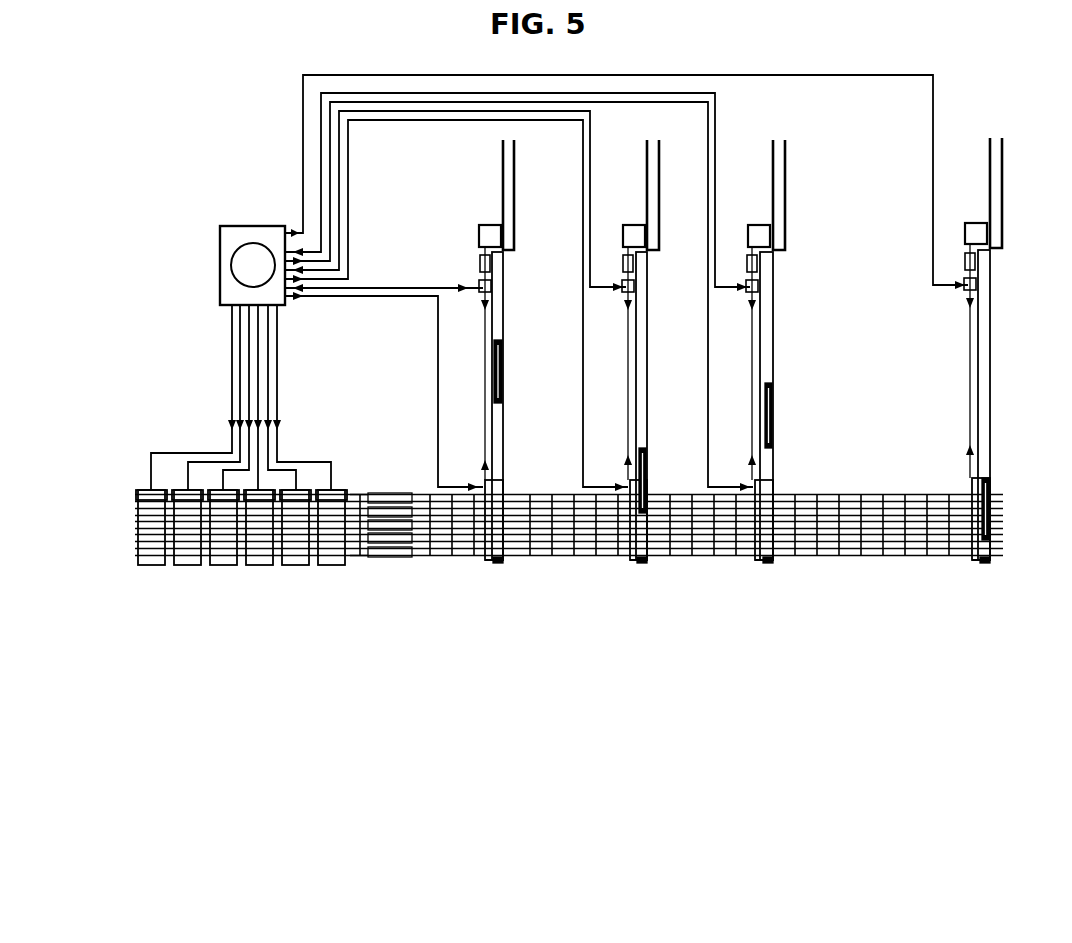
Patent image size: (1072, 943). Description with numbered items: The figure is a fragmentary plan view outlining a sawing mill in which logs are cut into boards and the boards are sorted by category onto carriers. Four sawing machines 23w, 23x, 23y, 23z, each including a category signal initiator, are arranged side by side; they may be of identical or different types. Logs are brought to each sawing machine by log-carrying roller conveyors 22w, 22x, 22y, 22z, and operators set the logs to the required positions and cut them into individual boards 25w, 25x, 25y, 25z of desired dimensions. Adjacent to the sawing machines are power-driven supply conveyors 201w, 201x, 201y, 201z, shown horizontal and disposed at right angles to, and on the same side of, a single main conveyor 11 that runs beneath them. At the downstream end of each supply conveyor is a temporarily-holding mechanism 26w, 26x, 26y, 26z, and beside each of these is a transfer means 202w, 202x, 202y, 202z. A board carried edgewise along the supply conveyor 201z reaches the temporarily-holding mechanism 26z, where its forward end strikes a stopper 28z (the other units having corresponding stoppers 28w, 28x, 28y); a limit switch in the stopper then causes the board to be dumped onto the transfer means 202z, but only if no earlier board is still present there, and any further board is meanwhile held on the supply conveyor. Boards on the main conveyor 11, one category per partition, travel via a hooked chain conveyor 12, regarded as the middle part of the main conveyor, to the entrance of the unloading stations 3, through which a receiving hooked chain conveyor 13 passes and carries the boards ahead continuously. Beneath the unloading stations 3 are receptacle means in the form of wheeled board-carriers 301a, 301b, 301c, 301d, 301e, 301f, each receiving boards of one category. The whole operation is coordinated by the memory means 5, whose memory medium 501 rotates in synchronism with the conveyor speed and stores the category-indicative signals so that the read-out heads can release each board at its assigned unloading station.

The memory means 5 is at (217, 247).
The memory medium 501 is at (242, 271).
The unloading stations 3 is at (244, 578).
The wheeled board-carrier 301a is at (333, 567).
The wheeled board-carrier 301b is at (292, 567).
The wheeled board-carrier 301c is at (258, 567).
The wheeled board-carrier 301d is at (222, 567).
The wheeled board-carrier 301e is at (180, 567).
The wheeled board-carrier 301f is at (142, 567).
The main conveyor 11 is at (880, 557).
The chain conveyor 12 is at (400, 560).
The hooked chain conveyor 13 is at (370, 560).
The roller conveyor 22z is at (516, 178).
The roller conveyor 22y is at (660, 178).
The roller conveyor 22x is at (786, 176).
The roller conveyor 22w is at (1003, 152).
The sawing machine 23z is at (478, 228).
The sawing machine 23y is at (622, 228).
The sawing machine 23x is at (747, 228).
The sawing machine 23w is at (968, 222).
The supply conveyor 201z is at (504, 276).
The supply conveyor 201y is at (648, 272).
The supply conveyor 201x is at (774, 308).
The supply conveyor 201w is at (992, 288).
The transfer means 202z is at (490, 562).
The transfer means 202y is at (636, 558).
The transfer means 202x is at (760, 562).
The transfer means 202w is at (974, 562).
The board 25z is at (503, 370).
The board 25y is at (645, 462).
The board 25x is at (773, 408).
The board 25w is at (989, 482).
The temporarily-holding mechanism 26z is at (504, 563).
The temporarily-holding mechanism 26y is at (648, 562).
The temporarily-holding mechanism 26x is at (774, 560).
The temporarily-holding mechanism 26w is at (990, 560).
The stopper 28z is at (496, 565).
The stopper 28y is at (643, 565).
The stopper 28x is at (770, 565).
The stopper 28w is at (985, 565).